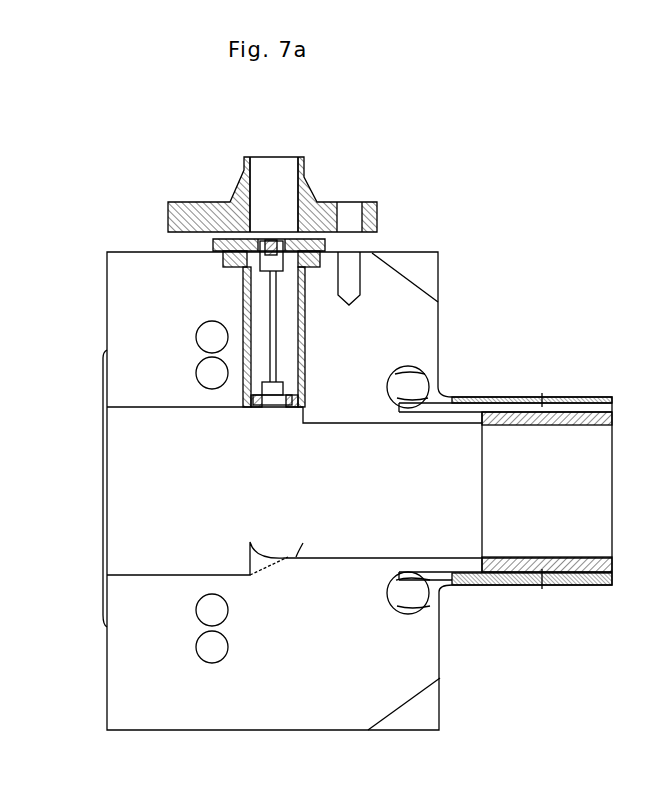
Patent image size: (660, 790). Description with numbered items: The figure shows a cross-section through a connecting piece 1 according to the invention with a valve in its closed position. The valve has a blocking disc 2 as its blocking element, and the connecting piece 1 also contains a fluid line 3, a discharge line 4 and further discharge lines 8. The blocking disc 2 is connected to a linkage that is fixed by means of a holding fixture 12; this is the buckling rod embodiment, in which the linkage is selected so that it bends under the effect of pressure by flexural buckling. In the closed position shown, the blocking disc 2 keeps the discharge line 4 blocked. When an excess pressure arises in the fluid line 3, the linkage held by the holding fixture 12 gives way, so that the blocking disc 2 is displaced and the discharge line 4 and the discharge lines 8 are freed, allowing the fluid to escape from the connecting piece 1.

The connecting piece 1 is at (420, 338).
The blocking disc 2 is at (300, 390).
The fluid line 3 is at (443, 507).
The discharge line 4 is at (272, 188).
The discharge lines 8 is at (220, 373).
The holding fixture 12 is at (270, 263).